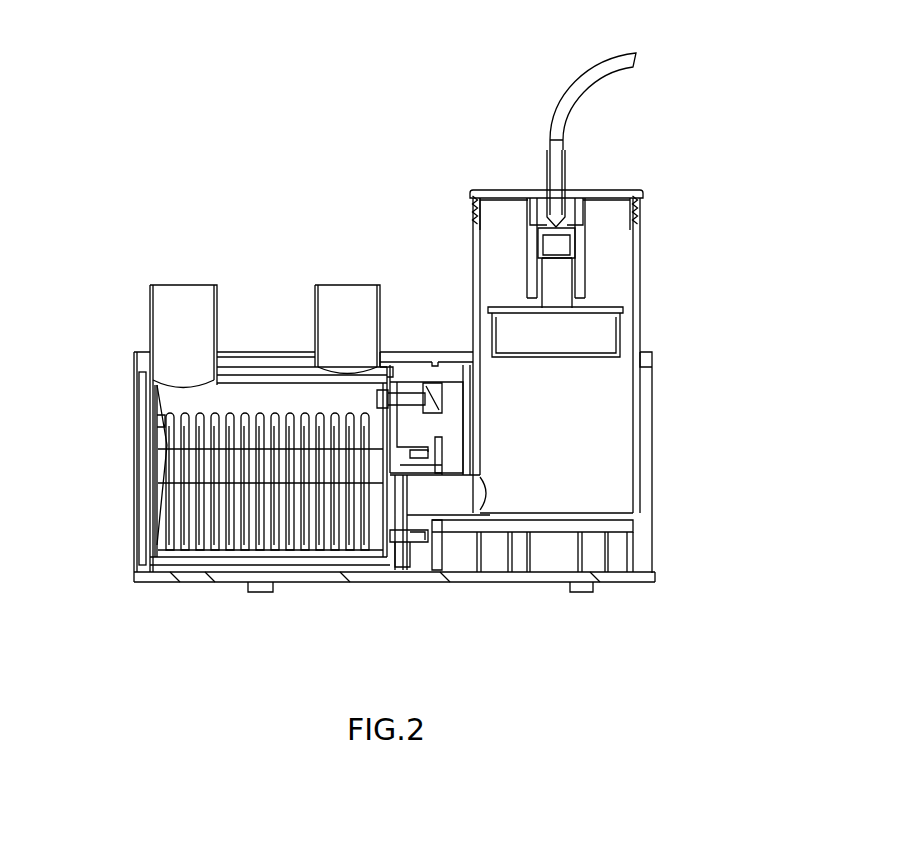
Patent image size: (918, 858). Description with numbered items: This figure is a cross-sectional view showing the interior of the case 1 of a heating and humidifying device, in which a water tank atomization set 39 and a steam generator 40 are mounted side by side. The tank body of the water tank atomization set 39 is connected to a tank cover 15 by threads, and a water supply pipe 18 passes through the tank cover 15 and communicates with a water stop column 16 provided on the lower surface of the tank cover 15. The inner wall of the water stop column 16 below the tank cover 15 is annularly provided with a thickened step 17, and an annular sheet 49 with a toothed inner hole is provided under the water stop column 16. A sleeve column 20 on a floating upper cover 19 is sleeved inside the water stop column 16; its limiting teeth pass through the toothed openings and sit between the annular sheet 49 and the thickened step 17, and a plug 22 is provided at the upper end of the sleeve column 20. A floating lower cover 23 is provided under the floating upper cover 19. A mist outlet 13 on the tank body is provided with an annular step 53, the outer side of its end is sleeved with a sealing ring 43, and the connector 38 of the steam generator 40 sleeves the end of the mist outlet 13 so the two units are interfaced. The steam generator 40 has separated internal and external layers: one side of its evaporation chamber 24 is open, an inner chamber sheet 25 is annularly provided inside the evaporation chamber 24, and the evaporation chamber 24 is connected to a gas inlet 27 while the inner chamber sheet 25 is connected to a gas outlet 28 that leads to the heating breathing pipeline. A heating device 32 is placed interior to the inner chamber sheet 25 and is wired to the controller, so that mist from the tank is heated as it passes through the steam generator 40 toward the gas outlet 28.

The case 1 is at (432, 350).
The mist outlet 13 is at (413, 545).
The tank cover 15 is at (613, 197).
The water stop column 16 is at (527, 237).
The thickened step 17 is at (575, 242).
The water supply pipe 18 is at (557, 105).
The floating upper cover 19 is at (613, 307).
The sleeve column 20 is at (557, 287).
The plug 22 is at (557, 250).
The floating lower cover 23 is at (618, 347).
The evaporation chamber 24 is at (258, 352).
The inner chamber sheet 25 is at (352, 372).
The gas inlet 27 is at (323, 287).
The gas outlet 28 is at (175, 292).
The heating device 32 is at (250, 528).
The connector 38 is at (418, 460).
The water tank atomization set 39 is at (482, 477).
The steam generator 40 is at (150, 350).
The sealing ring 43 is at (425, 545).
The annular sheet 49 is at (532, 295).
The annular step 53 is at (435, 475).